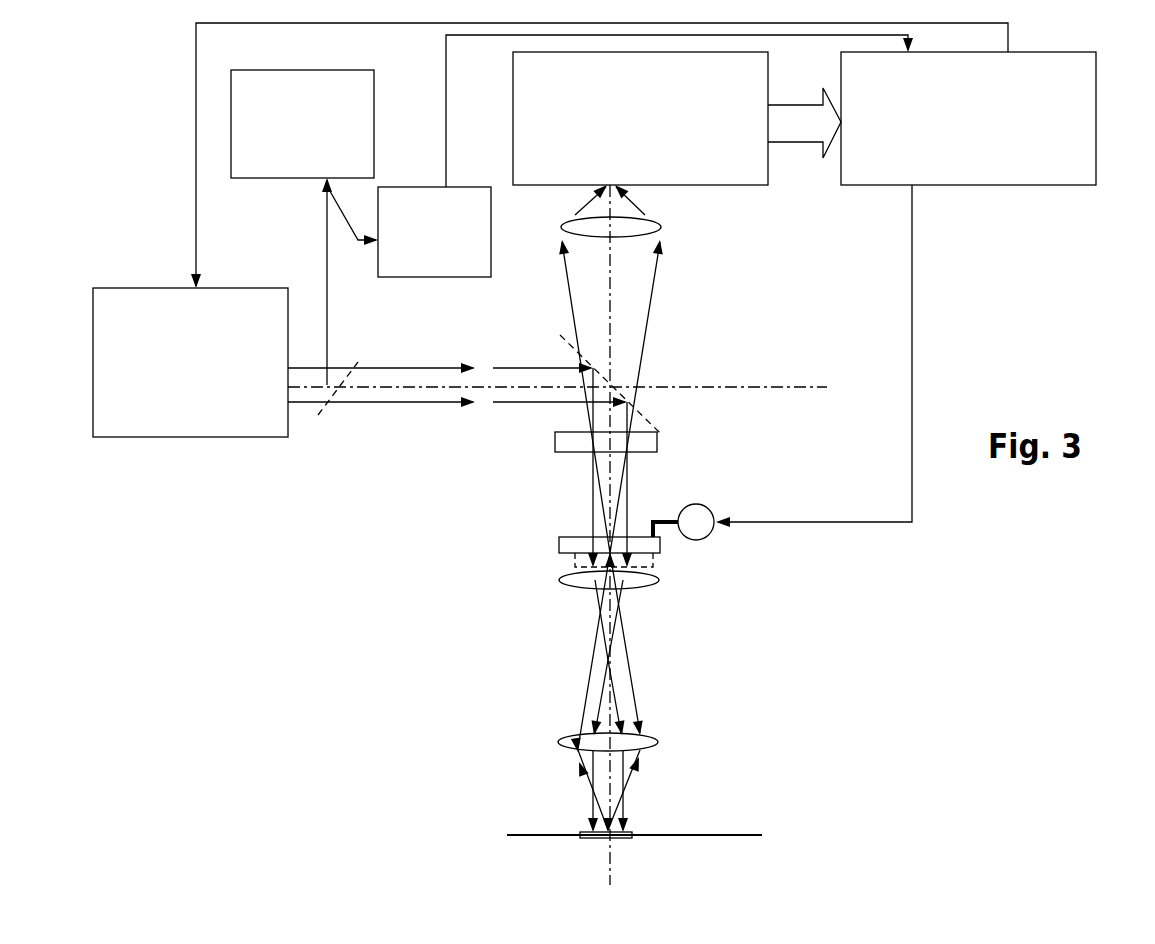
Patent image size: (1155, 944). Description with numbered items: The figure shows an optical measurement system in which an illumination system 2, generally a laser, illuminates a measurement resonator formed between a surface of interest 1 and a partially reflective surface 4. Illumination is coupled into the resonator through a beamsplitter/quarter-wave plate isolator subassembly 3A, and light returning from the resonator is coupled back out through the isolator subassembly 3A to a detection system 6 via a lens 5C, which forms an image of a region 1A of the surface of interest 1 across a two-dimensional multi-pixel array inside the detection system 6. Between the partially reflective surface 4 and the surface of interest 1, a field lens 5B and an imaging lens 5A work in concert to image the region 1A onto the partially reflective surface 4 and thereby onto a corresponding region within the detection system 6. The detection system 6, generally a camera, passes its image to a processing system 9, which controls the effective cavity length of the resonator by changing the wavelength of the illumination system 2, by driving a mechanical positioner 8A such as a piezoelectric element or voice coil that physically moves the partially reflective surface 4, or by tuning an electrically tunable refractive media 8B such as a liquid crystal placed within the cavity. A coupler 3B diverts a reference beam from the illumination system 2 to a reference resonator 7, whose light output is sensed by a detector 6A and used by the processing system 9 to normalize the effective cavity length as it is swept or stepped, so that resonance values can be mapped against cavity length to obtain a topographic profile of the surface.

The surface of interest 1 is at (742, 835).
The region of surface of interest 1A is at (624, 847).
The illumination system 2 is at (190, 362).
The beamsplitter/quarter-wave plate isolator subassembly 3A is at (660, 433).
The coupler 3B is at (358, 362).
The partially reflective surface 4 is at (561, 555).
The imaging lens 5A is at (658, 740).
The field lens 5B is at (562, 580).
The lens 5C is at (661, 227).
The detection system 6 is at (640, 118).
The detector 6A is at (434, 232).
The reference resonator 7 is at (302, 124).
The mechanical positioner 8A is at (699, 504).
The electrically tunable refractive media 8B is at (655, 561).
The processing system 9 is at (968, 118).